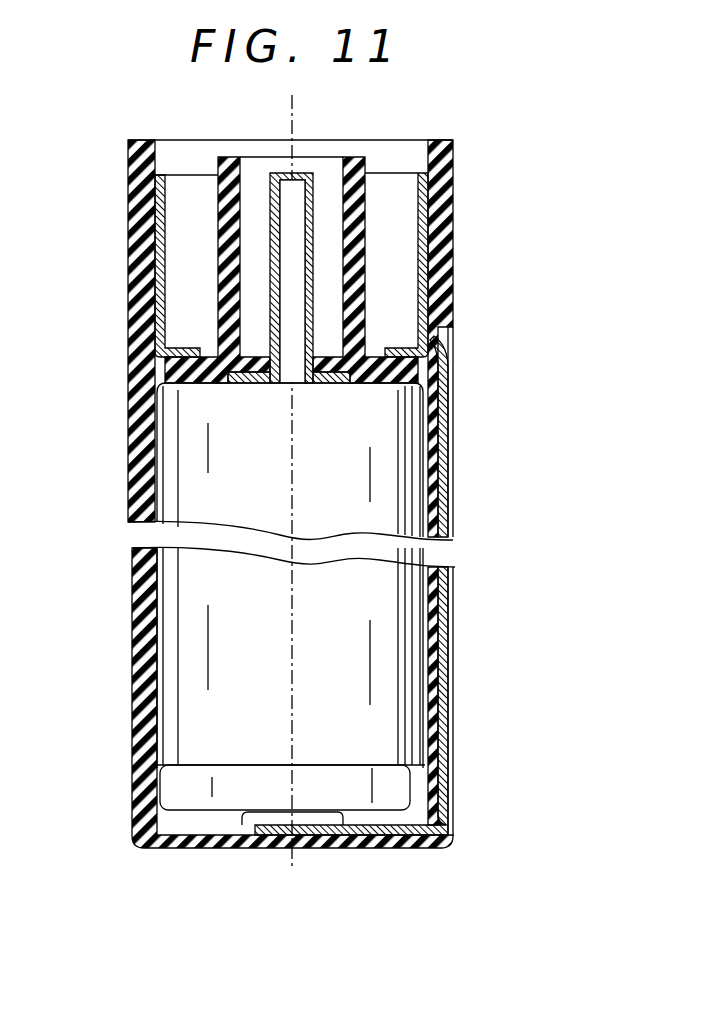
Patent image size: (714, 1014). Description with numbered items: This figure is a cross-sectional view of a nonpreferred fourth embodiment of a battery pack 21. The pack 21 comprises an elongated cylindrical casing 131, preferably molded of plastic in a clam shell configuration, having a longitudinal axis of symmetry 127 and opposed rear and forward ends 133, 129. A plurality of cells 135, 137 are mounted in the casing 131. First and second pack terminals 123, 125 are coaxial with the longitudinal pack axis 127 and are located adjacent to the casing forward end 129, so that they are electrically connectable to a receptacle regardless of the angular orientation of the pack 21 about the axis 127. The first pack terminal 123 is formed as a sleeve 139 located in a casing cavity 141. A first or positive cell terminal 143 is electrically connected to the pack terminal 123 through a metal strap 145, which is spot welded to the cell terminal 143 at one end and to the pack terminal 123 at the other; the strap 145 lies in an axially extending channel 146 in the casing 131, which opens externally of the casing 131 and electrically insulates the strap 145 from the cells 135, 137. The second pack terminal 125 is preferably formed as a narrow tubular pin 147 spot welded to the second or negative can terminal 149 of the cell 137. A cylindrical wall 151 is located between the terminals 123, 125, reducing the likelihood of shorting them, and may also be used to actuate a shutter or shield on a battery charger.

The battery pack 21 is at (518, 146).
The first pack terminal 123 is at (165, 190).
The second pack terminal 125 is at (264, 241).
The longitudinal pack axis 127 is at (292, 402).
The casing forward end 129 is at (452, 140).
The casing 131 is at (128, 388).
The casing rear end 133 is at (133, 785).
The cell 135 is at (188, 628).
The cell 137 is at (200, 478).
The sleeve 139 is at (158, 174).
The casing cavity 141 is at (250, 178).
The positive cell terminal 143 is at (321, 815).
The metal strap 145 is at (440, 505).
The channel 146 is at (450, 598).
The tubular pin 147 is at (312, 172).
The negative can terminal 149 is at (412, 467).
The cylindrical wall 151 is at (367, 158).